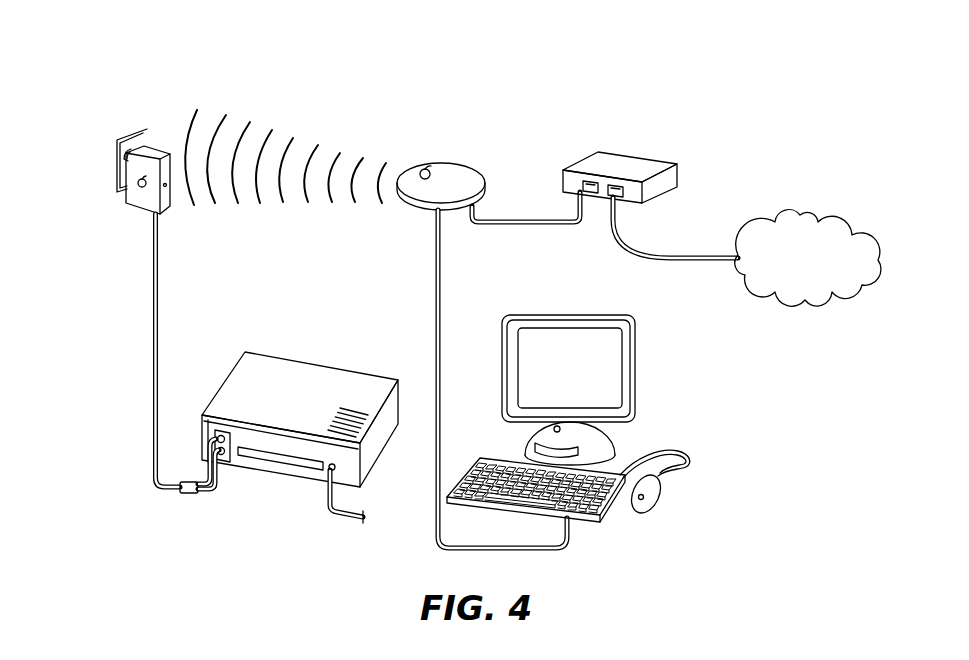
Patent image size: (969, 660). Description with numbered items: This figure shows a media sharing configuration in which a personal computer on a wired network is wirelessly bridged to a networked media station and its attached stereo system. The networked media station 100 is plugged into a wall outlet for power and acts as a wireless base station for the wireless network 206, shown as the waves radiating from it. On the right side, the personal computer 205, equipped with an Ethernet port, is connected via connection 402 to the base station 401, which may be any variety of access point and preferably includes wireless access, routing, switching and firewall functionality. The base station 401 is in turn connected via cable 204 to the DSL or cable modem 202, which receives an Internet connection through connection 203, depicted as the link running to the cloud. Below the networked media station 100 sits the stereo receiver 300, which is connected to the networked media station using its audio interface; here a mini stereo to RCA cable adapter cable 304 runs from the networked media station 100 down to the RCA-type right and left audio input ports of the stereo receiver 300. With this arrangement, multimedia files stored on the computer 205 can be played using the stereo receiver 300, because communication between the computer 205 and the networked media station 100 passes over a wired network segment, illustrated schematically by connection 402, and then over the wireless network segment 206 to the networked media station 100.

The networked media station 100 is at (140, 213).
The wireless network 206 is at (268, 138).
The base station 401 is at (438, 160).
The connection 402 is at (572, 533).
The cable 204 is at (515, 227).
The DSL or cable modem 202 is at (678, 172).
The connection 203 is at (718, 255).
The personal computer 205 is at (637, 380).
The stereo receiver 300 is at (312, 363).
The mini stereo to RCA cable adapter cable 304 is at (153, 352).